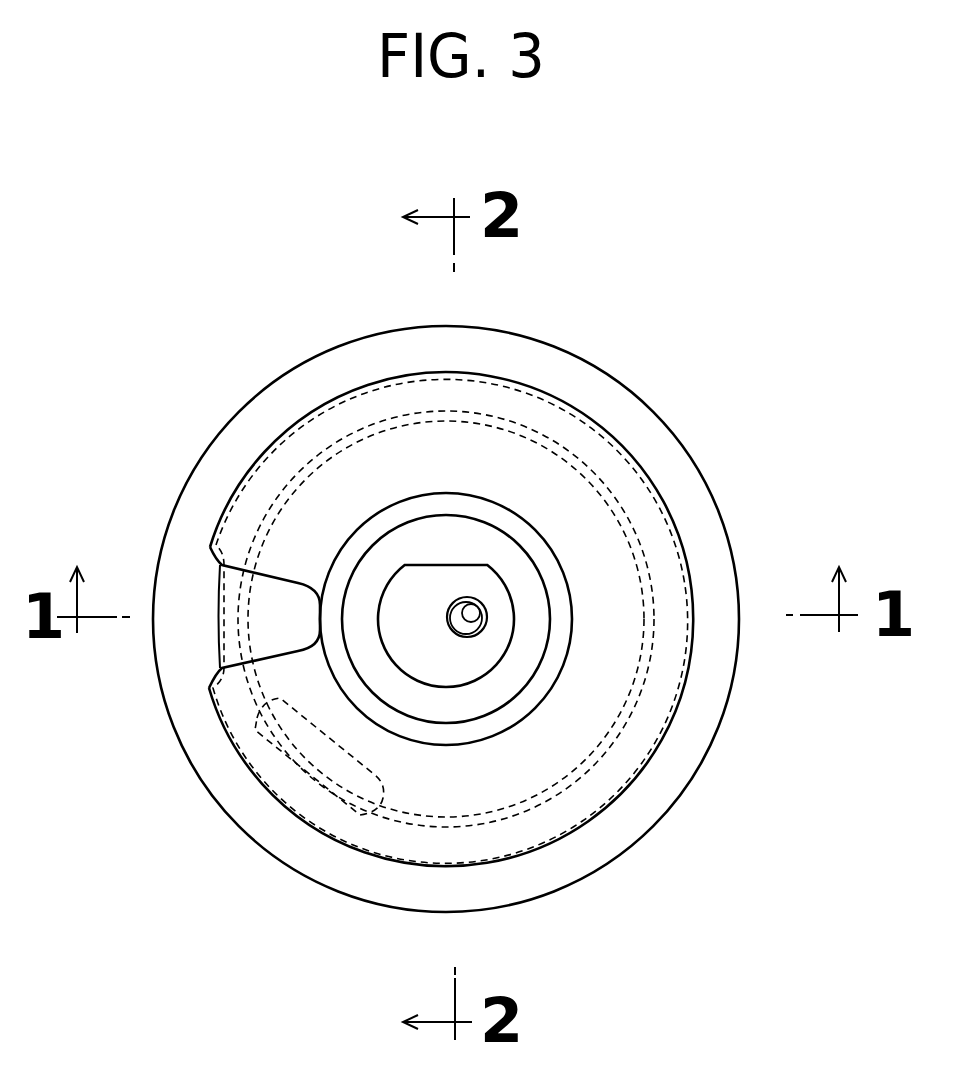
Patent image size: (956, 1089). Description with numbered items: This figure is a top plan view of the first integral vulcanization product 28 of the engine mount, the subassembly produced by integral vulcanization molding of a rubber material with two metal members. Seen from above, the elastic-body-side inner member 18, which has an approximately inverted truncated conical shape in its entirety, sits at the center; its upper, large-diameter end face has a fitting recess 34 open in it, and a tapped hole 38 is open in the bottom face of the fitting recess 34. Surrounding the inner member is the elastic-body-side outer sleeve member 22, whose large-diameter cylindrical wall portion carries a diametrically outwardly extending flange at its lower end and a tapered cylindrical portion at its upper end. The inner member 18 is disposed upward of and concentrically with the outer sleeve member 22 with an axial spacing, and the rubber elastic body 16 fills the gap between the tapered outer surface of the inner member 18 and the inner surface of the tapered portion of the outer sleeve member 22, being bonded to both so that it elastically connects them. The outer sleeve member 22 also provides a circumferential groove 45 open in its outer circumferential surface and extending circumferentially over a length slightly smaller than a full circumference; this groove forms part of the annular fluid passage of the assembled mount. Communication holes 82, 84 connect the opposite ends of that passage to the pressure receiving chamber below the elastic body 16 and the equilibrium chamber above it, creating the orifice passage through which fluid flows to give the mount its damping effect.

The first integral vulcanization product 28 is at (582, 314).
The rubber elastic body 16 is at (553, 480).
The communication hole 82 is at (216, 649).
The elastic-body-side outer sleeve member 22 is at (655, 626).
The circumferential groove 45 is at (603, 752).
The elastic-body-side inner member 18 is at (460, 663).
The fitting recess 34 is at (403, 671).
The tapped hole 38 is at (487, 616).
The communication hole 84 is at (337, 806).